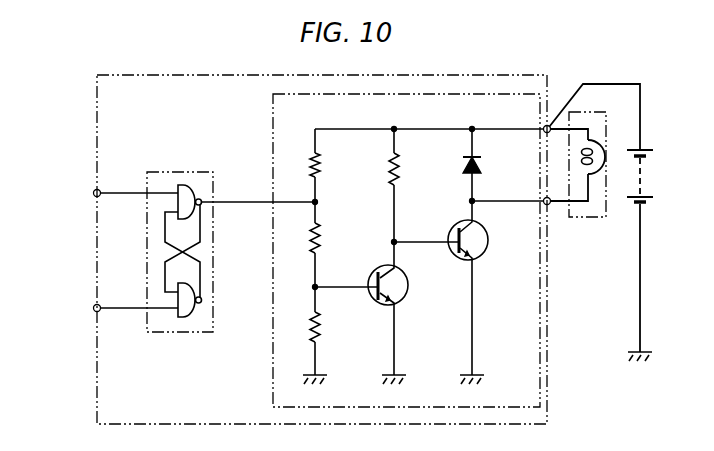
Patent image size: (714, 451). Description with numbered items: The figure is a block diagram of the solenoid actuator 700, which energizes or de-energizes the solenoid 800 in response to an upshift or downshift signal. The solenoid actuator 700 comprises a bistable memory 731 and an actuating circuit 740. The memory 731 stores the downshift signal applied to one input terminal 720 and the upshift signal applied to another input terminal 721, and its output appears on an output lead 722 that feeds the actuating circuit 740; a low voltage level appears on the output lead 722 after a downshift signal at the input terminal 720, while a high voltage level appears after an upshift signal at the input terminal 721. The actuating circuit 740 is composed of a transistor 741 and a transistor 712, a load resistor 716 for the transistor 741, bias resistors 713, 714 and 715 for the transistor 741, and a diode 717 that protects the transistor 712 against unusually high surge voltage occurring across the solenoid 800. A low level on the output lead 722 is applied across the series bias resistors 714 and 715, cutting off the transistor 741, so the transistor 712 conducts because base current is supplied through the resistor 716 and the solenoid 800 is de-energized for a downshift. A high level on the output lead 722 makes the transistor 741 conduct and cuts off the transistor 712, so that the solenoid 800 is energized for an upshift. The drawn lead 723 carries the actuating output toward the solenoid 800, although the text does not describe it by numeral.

The solenoid actuator 700 is at (168, 75).
The actuating circuit 740 is at (272, 126).
The bistable memory 731 is at (188, 172).
The input terminal 720 is at (93, 193).
The input terminal 721 is at (93, 308).
The output lead 722 is at (245, 204).
The bias resistor 713 is at (320, 163).
The bias resistor 714 is at (321, 237).
The bias resistor 715 is at (320, 320).
The load resistor 716 is at (388, 178).
The diode 717 is at (463, 166).
The transistor 741 is at (399, 271).
The transistor 712 is at (487, 238).
The output terminal 723 is at (512, 188).
The solenoid 800 is at (573, 217).